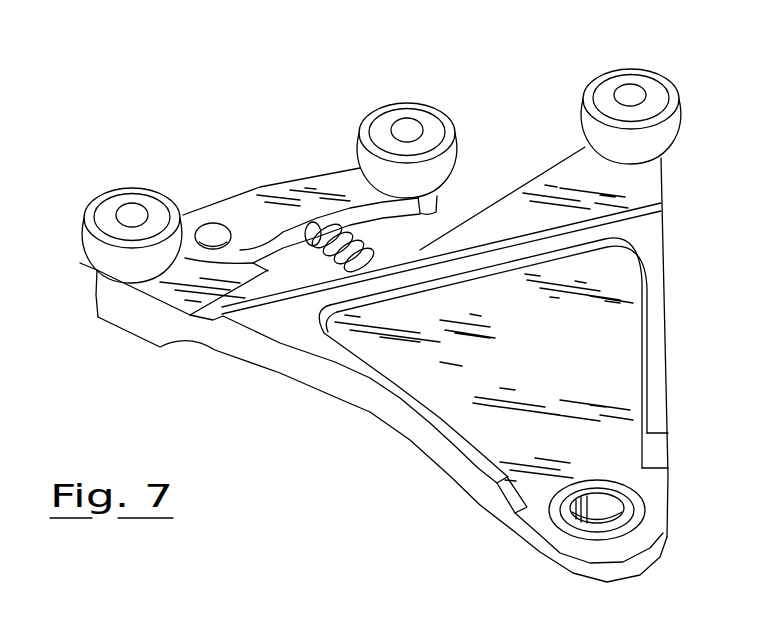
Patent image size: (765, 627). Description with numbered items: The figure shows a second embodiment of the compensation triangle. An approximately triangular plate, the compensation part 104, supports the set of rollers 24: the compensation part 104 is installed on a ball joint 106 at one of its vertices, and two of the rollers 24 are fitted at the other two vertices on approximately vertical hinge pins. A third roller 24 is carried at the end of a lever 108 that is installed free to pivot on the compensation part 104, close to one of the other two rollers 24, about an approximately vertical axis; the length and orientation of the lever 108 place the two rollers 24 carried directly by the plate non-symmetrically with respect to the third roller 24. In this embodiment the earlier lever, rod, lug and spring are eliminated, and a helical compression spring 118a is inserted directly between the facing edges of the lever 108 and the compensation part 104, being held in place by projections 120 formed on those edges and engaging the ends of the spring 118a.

The roller 24 is at (110, 212).
The compensation part 104 is at (460, 363).
The ball joint 106 is at (557, 516).
The lever 108 is at (240, 215).
The helical compression spring 118a is at (307, 224).
The projection 120 is at (318, 222).